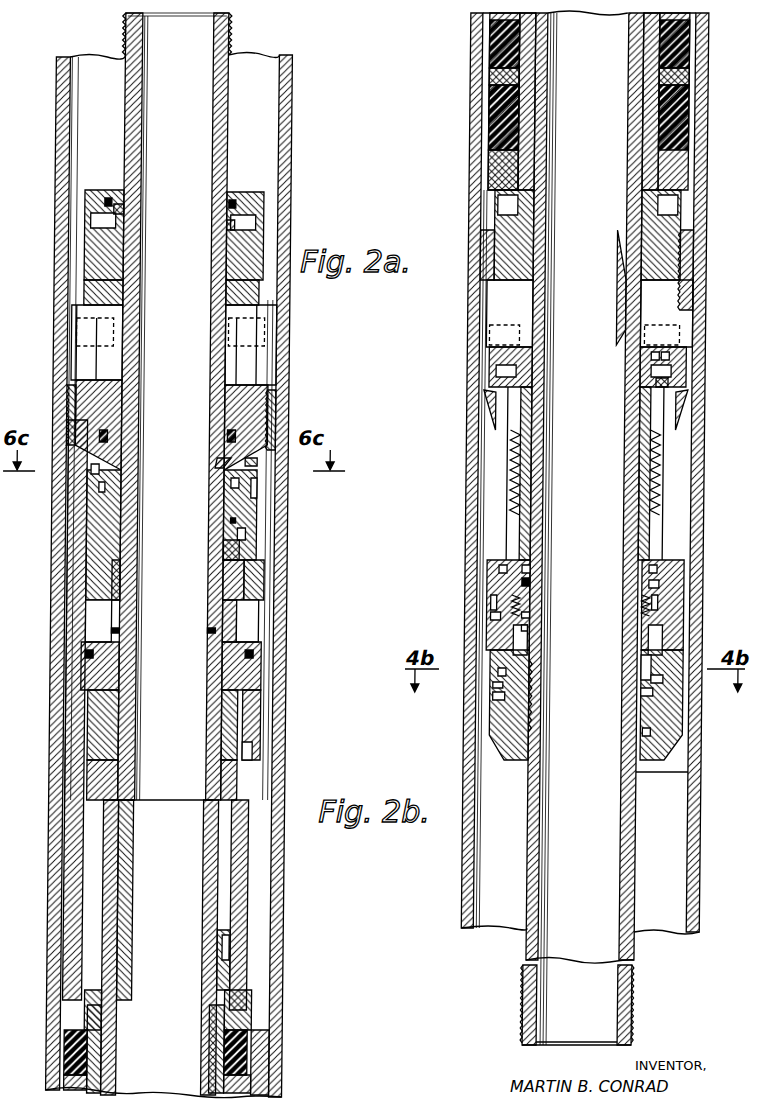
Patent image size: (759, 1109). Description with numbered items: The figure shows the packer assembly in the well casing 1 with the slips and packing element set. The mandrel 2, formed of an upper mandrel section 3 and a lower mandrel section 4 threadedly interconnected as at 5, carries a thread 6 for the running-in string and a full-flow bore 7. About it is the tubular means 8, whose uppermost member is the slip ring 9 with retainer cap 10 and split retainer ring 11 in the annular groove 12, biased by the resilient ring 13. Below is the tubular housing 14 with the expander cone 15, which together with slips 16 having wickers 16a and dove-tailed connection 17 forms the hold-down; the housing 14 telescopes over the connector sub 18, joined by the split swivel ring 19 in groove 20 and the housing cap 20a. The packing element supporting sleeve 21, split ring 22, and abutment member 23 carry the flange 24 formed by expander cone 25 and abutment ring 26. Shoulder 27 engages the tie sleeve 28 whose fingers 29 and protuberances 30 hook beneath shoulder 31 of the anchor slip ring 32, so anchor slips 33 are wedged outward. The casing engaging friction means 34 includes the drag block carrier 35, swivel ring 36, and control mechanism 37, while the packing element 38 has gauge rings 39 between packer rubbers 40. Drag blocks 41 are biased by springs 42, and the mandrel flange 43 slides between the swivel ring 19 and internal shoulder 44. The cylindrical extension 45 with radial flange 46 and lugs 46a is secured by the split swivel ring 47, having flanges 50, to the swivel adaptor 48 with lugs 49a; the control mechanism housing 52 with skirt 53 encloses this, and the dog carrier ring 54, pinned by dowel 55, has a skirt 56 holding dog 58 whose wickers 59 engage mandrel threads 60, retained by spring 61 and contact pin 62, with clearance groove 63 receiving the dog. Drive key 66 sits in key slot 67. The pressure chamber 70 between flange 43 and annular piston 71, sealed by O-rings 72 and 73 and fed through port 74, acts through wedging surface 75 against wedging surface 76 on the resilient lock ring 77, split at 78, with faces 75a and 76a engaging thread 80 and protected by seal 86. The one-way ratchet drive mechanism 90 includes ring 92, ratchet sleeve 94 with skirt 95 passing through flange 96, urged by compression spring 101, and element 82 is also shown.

In FIG. 2a, the well casing 1 is at (294, 160).
In FIG. 2b, the well casing 1 is at (472, 162).
In FIG. 2a, the mandrel 2 is at (102, 757).
In FIG. 2a, the upper mandrel section 3 is at (217, 610).
In FIG. 2a, the lower mandrel section 4 is at (207, 902).
In FIG. 2a, the threaded interconnection 5 is at (217, 827).
In FIG. 2a, the thread 6 is at (231, 36).
In FIG. 2a, the bore 7 is at (216, 126).
In FIG. 2b, the bore 7 is at (552, 186).
In FIG. 2a, the tubular means 8 is at (267, 567).
In FIG. 2a, the slip ring 9 is at (258, 298).
In FIG. 2a, the retainer cap 10 is at (90, 200).
In FIG. 2a, the split retainer ring 11 is at (252, 223).
In FIG. 2a, the annular groove 12 is at (122, 214).
In FIG. 2a, the resilient ring 13 is at (227, 230).
In FIG. 2a, the tubular housing 14 is at (257, 587).
In FIG. 2a, the expander cone 15 is at (235, 410).
In FIG. 2a, the tapered slips 16 is at (78, 391).
In FIG. 2a, the upwardly facing wickers 16a is at (74, 411).
In FIG. 2a, the dove-tailed connection 17 is at (82, 319).
In FIG. 2a, the connector sub 18 is at (250, 852).
In FIG. 2a, the split swivel ring 19 is at (250, 692).
In FIG. 2a, the groove 20 is at (243, 712).
In FIG. 2a, the housing cap 20a is at (250, 762).
In FIG. 2a, the packing element supporting sleeve 21 is at (222, 1076).
In FIG. 2b, the packing element supporting sleeve 21 is at (532, 52).
In FIG. 2a, the split ring 22 is at (234, 951).
In FIG. 2a, the annular abutment member 23 is at (244, 1011).
In FIG. 2b, the radially outwardly projecting flange 24 is at (490, 135).
In FIG. 2b, the expander cone 25 is at (677, 215).
In FIG. 2b, the abutment ring 26 is at (692, 161).
In FIG. 2b, the radially inwardly projecting shoulder 27 is at (629, 286).
In FIG. 2b, the tie sleeve 28 is at (657, 238).
In FIG. 2b, the fingers 29 is at (542, 313).
In FIG. 2b, the protuberances 30 is at (639, 361).
In FIG. 2b, the inwardly projecting shoulder 31 is at (667, 343).
In FIG. 2b, the anchor slip ring 32 is at (667, 365).
In FIG. 2b, the anchor slips 33 is at (685, 275).
In FIG. 2b, the casing engaging friction means 34 is at (692, 485).
In FIG. 2b, the drag block carrier 35 is at (642, 538).
In FIG. 2b, the swivel ring 36 is at (667, 375).
In FIG. 2b, the control mechanism 37 is at (677, 718).
In FIG. 2a, the packing element 38 is at (280, 1061).
In FIG. 2a, the gauge rings 39 is at (260, 1093).
In FIG. 2b, the gauge rings 39 is at (692, 27).
In FIG. 2a, the packer rubbers 40 is at (267, 1048).
In FIG. 2b, the packer rubbers 40 is at (702, 65).
In FIG. 2b, the friction drag blocks 41 is at (497, 423).
In FIG. 2b, the springs 42 is at (522, 470).
In FIG. 2a, the annular flange 43 is at (252, 657).
In FIG. 2a, the internal shoulder 44 is at (250, 614).
In FIG. 2b, the cylindrical extension 45 is at (662, 568).
In FIG. 2b, the radial flange 46 is at (507, 588).
In FIG. 2b, the lugs 46a is at (662, 588).
In FIG. 2b, the split swivel ring 47 is at (667, 601).
In FIG. 2b, the annular swivel adaptor 48 is at (667, 641).
In FIG. 2b, the lugs 49a is at (670, 618).
In FIG. 2b, the internal radial flanges 50 is at (492, 603).
In FIG. 2b, the control mechanism housing 52 is at (662, 733).
In FIG. 2b, the axially extended skirt 53 is at (497, 618).
In FIG. 2b, the dog carrier ring 54 is at (494, 673).
In FIG. 2b, the dowel 55 is at (650, 663).
In FIG. 2b, the depending skirt 56 is at (502, 715).
In FIG. 2b, the dog 58 is at (662, 683).
In FIG. 2b, the internal wickers 59 is at (667, 693).
In FIG. 2b, the wickers or threads 60 is at (527, 848).
In FIG. 2b, the annular spring 61 is at (502, 688).
In FIG. 2b, the contact pin 62 is at (507, 703).
In FIG. 2b, the longitudinally extended groove 63 is at (632, 775).
In FIG. 2b, the drive key 66 is at (502, 638).
In FIG. 2b, the key slot 67 is at (540, 681).
In FIG. 2a, the pressure chamber 70 is at (102, 587).
In FIG. 2a, the annular piston 71 is at (242, 547).
In FIG. 2a, the O-ring 72 is at (238, 522).
In FIG. 2a, the O-ring 73 is at (227, 567).
In FIG. 2a, the port 74 is at (214, 631).
In FIG. 2a, the internal tapered wedging surface 75 is at (242, 497).
In FIG. 2a, the lower face 75a is at (237, 484).
In FIG. 2a, the wedging surface 76 is at (222, 462).
In FIG. 2a, the angularly disposed face 76a is at (260, 464).
In FIG. 2a, the resilient lock ring 77 is at (262, 484).
In FIG. 2a, the split 78 is at (106, 487).
In FIG. 2a, the uniform thread 80 is at (247, 534).
In FIG. 2a, the pin 82 is at (100, 470).
In FIG. 2a, the seal 86 is at (235, 438).
In FIG. 2b, the one-way ratchet drive mechanism 90 is at (537, 588).
In FIG. 2b, the ring 92 is at (542, 571).
In FIG. 2b, the ratchet sleeve 94 is at (507, 571).
In FIG. 2b, the skirt 95 is at (532, 618).
In FIG. 2b, the radially inwardly projecting flange 96 is at (532, 633).
In FIG. 2b, the coiled compression spring 101 is at (532, 603).